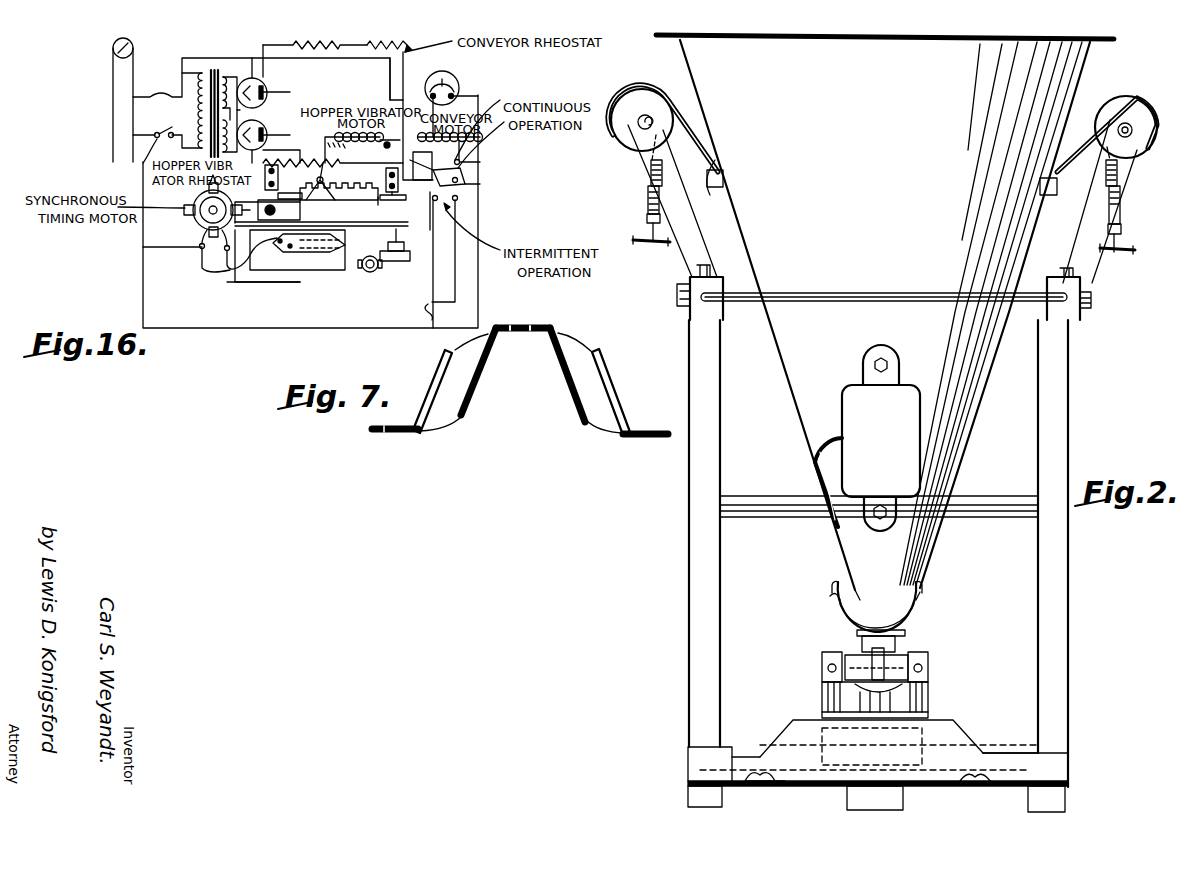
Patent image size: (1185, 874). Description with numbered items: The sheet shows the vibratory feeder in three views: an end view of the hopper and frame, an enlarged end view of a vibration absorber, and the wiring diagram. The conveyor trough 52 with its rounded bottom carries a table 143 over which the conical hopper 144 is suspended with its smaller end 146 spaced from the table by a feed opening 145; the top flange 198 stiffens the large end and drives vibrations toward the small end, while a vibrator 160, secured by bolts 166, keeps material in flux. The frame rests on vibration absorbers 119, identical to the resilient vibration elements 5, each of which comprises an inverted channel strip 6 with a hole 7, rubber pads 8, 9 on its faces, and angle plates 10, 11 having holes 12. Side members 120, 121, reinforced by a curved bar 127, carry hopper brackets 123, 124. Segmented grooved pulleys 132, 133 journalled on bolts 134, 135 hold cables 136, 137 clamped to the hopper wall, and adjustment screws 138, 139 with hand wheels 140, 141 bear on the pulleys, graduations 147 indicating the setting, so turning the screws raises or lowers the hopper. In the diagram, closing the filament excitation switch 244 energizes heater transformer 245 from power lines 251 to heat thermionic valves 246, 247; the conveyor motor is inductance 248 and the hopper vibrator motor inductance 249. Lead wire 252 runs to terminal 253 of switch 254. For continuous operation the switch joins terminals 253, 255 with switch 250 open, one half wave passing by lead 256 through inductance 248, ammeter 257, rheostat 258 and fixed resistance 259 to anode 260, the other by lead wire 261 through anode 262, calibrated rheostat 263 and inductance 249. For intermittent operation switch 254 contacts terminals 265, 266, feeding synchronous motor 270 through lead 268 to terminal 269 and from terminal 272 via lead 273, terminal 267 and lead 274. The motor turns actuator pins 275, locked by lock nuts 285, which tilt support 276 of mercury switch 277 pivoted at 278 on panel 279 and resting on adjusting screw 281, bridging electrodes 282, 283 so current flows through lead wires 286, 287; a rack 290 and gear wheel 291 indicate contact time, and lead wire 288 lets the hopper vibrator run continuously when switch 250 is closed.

In FIG. 7, the resilient vibration element 5 is at (520, 381).
In FIG. 2, the resilient vibration element 5 is at (748, 768).
In FIG. 7, the inverted channel strip 6 is at (532, 322).
In FIG. 7, the hole 7 is at (508, 326).
In FIG. 7, the rubber pad 8 is at (478, 383).
In FIG. 7, the rubber pad 9 is at (585, 398).
In FIG. 7, the angle plate 10 is at (440, 366).
In FIG. 7, the angle plate 11 is at (615, 395).
In FIG. 7, the hole 12 is at (642, 442).
In FIG. 2, the conveyor trough 52 is at (838, 603).
In FIG. 2, the vibration absorber 119 is at (1028, 802).
In FIG. 2, the side member 120 is at (689, 551).
In FIG. 2, the side member 121 is at (1068, 565).
In FIG. 2, the hopper bracket 123 is at (688, 262).
In FIG. 2, the hopper bracket 124 is at (1085, 260).
In FIG. 2, the curved bar or pipe 127 is at (862, 303).
In FIG. 2, the segmented grooved pulley 132 is at (637, 116).
In FIG. 2, the segmented grooved pulley 133 is at (1132, 134).
In FIG. 2, the bolt 134 is at (649, 114).
In FIG. 2, the bolt 135 is at (1128, 120).
In FIG. 2, the cable 136 is at (713, 194).
In FIG. 2, the cable 137 is at (1086, 115).
In FIG. 2, the adjustment screw 138 is at (647, 218).
In FIG. 2, the adjustment screw 139 is at (1121, 230).
In FIG. 2, the hand wheel 140 is at (636, 240).
In FIG. 2, the hand wheel 141 is at (1133, 250).
In FIG. 2, the table or platform 143 is at (875, 606).
In FIG. 2, the conical hopper 144 is at (898, 207).
In FIG. 2, the space 145 is at (856, 584).
In FIG. 2, the end 146 is at (945, 576).
In FIG. 2, the graduations 147 is at (627, 108).
In FIG. 2, the vibrator 160 is at (896, 437).
In FIG. 2, the bolt 166 is at (868, 366).
In FIG. 2, the top flange 198 is at (860, 40).
In FIG. 16, the filament excitation switch 244 is at (252, 118).
In FIG. 16, the heater transformer 245 is at (198, 105).
In FIG. 16, the thermionic valve 246 is at (263, 85).
In FIG. 16, the thermionic valve 247 is at (280, 141).
In FIG. 16, the inductance 248 is at (486, 121).
In FIG. 16, the inductance 249 is at (378, 140).
In FIG. 16, the switch 250 is at (403, 82).
In FIG. 16, the power lines 251 is at (113, 72).
In FIG. 16, the lead wire 252 is at (143, 265).
In FIG. 16, the terminal 253 is at (488, 162).
In FIG. 16, the switch 254 is at (458, 180).
In FIG. 16, the terminal 255 is at (466, 193).
In FIG. 16, the lead 256 is at (362, 150).
In FIG. 16, the ammeter 257 is at (456, 80).
In FIG. 16, the rheostat 258 is at (403, 40).
In FIG. 16, the fixed resistance 259 is at (331, 40).
In FIG. 16, the anode 260 is at (291, 91).
In FIG. 16, the lead wire 261 is at (196, 57).
In FIG. 16, the anode 262 is at (263, 109).
In FIG. 16, the calibrated rheostat 263 is at (281, 153).
In FIG. 16, the terminal 265 is at (458, 200).
In FIG. 16, the terminal 266 is at (437, 201).
In FIG. 16, the terminal 267 is at (437, 166).
In FIG. 16, the lead 268 is at (198, 249).
In FIG. 16, the terminal 269 is at (201, 249).
In FIG. 16, the synchronous motor 270 is at (197, 215).
In FIG. 16, the terminal 272 is at (227, 251).
In FIG. 16, the lead 273 is at (256, 278).
In FIG. 16, the lead 274 is at (390, 74).
In FIG. 16, the switch actuator pin 275 is at (209, 189).
In FIG. 16, the support 276 is at (278, 194).
In FIG. 16, the mercury switch 277 is at (338, 262).
In FIG. 16, the pivot 278 is at (281, 210).
In FIG. 16, the panel 279 is at (368, 221).
In FIG. 16, the adjusting screw 281 is at (404, 240).
In FIG. 16, the electrode 282 is at (277, 242).
In FIG. 16, the electrode 283 is at (288, 248).
In FIG. 16, the lock nut 285 is at (265, 175).
In FIG. 16, the lead wire 286 is at (414, 310).
In FIG. 16, the lead wire 287 is at (207, 267).
In FIG. 16, the lead wire 288 is at (404, 199).
In FIG. 16, the rack 290 is at (300, 190).
In FIG. 16, the gear wheel 291 is at (331, 181).